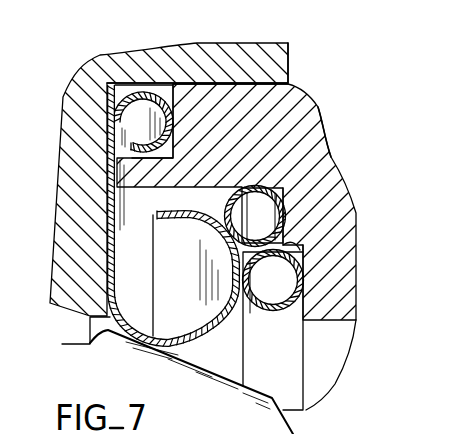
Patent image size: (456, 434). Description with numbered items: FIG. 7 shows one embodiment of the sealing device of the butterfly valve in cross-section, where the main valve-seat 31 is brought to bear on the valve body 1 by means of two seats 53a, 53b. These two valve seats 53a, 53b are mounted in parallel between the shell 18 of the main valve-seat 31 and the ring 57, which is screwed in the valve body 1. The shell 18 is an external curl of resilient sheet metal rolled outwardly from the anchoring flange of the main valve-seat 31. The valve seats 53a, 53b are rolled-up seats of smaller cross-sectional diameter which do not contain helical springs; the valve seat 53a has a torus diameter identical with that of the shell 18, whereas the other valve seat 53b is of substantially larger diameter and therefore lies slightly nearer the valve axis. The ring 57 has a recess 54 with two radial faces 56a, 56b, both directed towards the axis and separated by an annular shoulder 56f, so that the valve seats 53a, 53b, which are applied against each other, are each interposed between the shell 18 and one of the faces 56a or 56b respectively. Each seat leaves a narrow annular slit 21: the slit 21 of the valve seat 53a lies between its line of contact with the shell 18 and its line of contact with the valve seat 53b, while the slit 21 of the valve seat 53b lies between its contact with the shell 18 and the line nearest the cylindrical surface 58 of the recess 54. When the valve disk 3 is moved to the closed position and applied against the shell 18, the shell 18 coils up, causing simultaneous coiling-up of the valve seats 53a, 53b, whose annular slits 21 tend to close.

The valve body 1 is at (193, 63).
The main valve-seat 31 is at (220, 97).
The annular slit 21 is at (328, 160).
The ring 57 is at (311, 143).
The cylindrical surface 58 is at (271, 153).
The valve seat 53a is at (303, 278).
The valve seat 53b is at (295, 240).
The radial face 56a is at (300, 312).
The radial face 56b is at (303, 245).
The annular shoulder 56f is at (301, 258).
The recess 54 is at (135, 230).
The shell 18 is at (210, 337).
The butterfly valve disk 3 is at (127, 342).